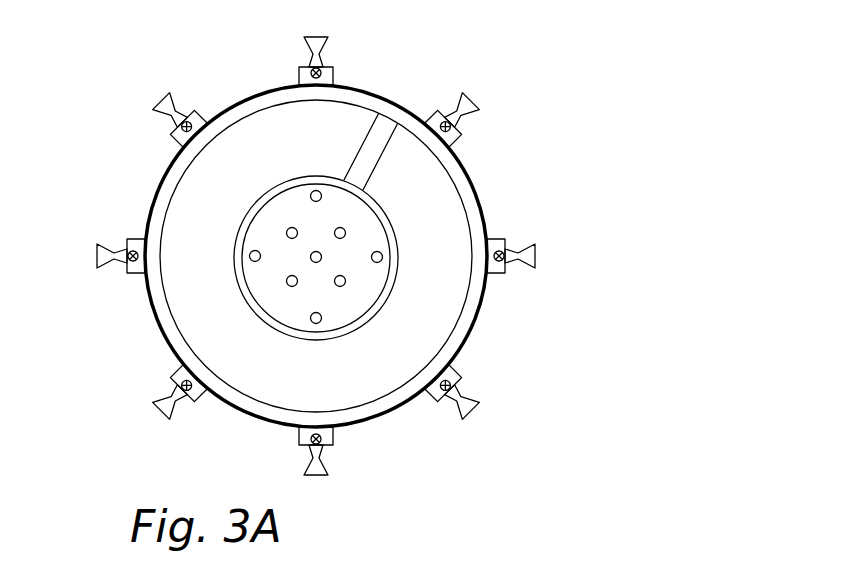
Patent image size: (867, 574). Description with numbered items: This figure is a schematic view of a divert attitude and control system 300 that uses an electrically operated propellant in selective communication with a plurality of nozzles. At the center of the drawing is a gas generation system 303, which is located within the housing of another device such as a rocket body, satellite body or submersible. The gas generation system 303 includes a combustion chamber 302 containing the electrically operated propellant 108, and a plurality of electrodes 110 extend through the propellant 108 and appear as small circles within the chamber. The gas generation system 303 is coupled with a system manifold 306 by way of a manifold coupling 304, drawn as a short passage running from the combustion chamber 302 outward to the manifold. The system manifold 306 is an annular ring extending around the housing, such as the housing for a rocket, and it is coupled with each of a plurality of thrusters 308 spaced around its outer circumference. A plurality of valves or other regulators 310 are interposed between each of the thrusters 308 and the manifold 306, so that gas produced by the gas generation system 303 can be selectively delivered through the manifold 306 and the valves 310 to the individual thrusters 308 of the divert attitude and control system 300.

The divert attitude and control system 300 is at (433, 65).
The combustion chamber 302 is at (263, 194).
The gas generation system 303 is at (263, 242).
The manifold coupling 304 is at (358, 158).
The system manifold 306 is at (473, 205).
The thrusters 308 is at (318, 38).
The valves 310 is at (311, 72).
The electrically operated propellant 108 is at (293, 305).
The electrodes 110 is at (382, 255).